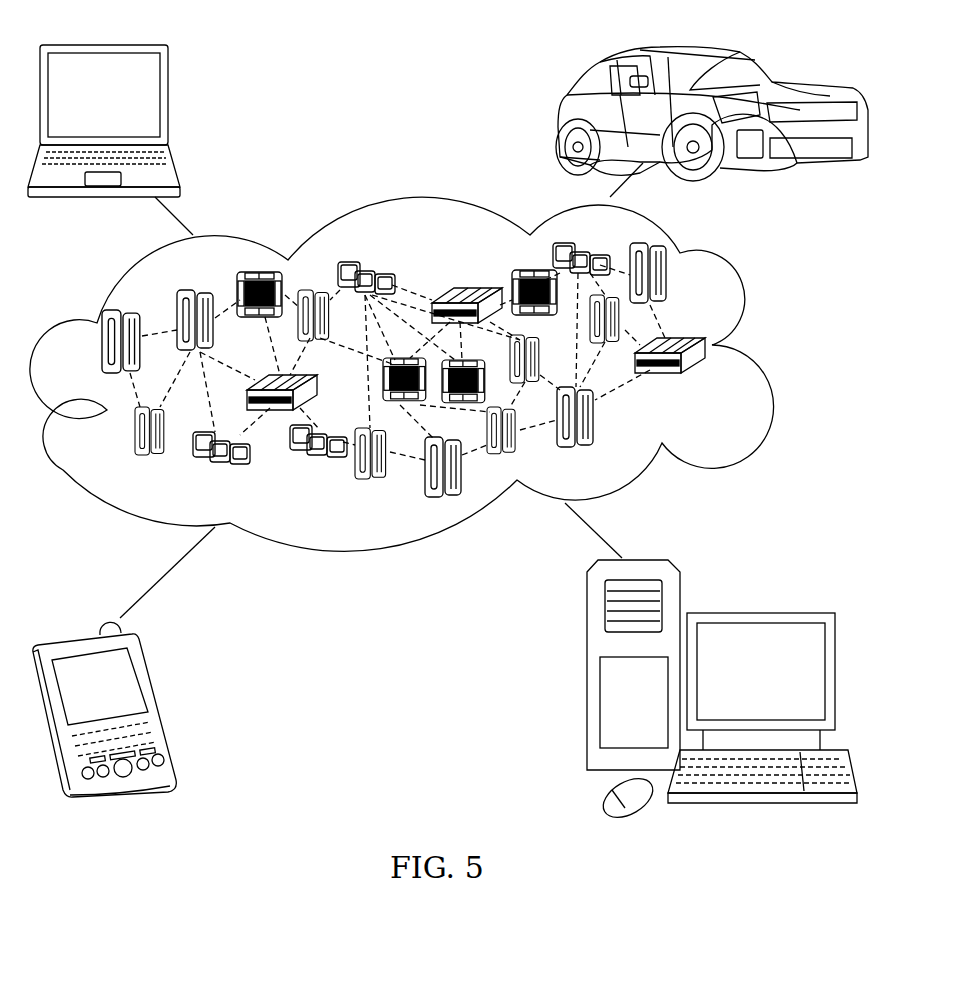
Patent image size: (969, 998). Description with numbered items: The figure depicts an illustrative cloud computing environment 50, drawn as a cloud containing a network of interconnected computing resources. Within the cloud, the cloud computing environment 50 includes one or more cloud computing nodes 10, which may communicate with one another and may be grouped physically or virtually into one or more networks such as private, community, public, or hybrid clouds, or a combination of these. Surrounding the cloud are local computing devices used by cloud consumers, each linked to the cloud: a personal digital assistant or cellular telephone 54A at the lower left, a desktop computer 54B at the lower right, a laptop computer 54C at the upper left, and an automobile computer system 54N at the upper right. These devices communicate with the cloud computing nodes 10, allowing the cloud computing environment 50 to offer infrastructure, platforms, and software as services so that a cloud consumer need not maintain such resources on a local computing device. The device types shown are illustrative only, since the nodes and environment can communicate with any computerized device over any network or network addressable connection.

The cloud computing node 10 is at (709, 381).
The cloud computing environment 50 is at (758, 353).
The personal digital assistant or cellular telephone 54A is at (157, 697).
The desktop computer 54B is at (757, 613).
The laptop computer 54C is at (168, 100).
The automobile computer system 54N is at (558, 118).